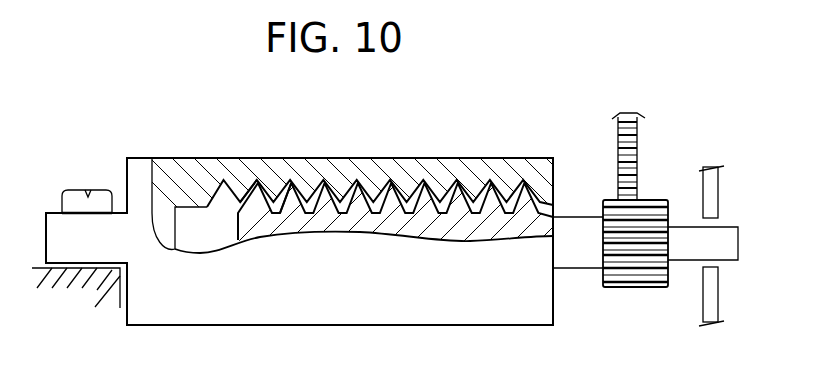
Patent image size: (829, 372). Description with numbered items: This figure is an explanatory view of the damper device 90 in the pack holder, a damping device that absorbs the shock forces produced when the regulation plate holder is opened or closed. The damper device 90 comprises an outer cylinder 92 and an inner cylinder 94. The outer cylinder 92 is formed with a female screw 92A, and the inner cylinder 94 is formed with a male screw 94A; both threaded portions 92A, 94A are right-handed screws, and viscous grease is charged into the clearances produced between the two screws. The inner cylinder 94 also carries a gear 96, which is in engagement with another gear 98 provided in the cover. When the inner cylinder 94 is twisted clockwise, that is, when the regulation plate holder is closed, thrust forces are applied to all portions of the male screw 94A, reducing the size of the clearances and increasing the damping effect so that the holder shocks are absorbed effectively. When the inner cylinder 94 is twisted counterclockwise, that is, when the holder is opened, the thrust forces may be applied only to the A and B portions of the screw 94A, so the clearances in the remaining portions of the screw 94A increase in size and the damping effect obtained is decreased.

The damper device 90 is at (410, 145).
The outer cylinder 92 is at (142, 165).
The female screw 92A is at (256, 183).
The inner cylinder 94 is at (578, 257).
The male screw 94A is at (311, 190).
The gear 96 is at (642, 288).
The gear 98 is at (638, 153).
The A portion of the screw A is at (250, 196).
The B portion of the screw B is at (287, 200).